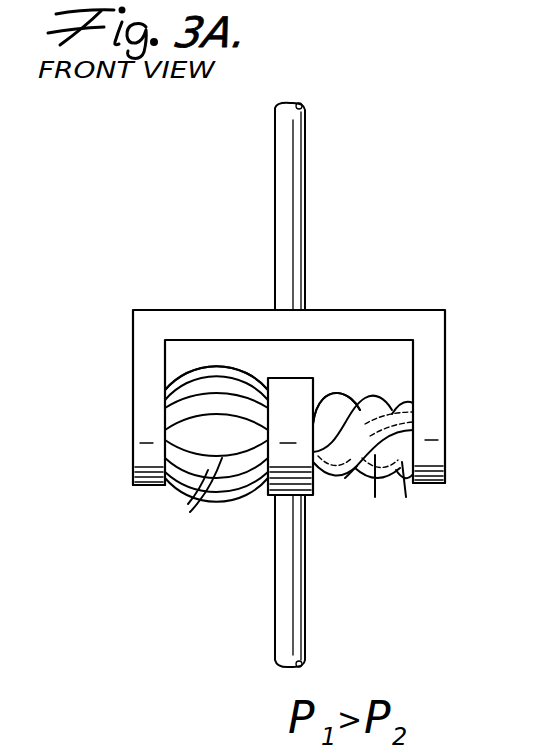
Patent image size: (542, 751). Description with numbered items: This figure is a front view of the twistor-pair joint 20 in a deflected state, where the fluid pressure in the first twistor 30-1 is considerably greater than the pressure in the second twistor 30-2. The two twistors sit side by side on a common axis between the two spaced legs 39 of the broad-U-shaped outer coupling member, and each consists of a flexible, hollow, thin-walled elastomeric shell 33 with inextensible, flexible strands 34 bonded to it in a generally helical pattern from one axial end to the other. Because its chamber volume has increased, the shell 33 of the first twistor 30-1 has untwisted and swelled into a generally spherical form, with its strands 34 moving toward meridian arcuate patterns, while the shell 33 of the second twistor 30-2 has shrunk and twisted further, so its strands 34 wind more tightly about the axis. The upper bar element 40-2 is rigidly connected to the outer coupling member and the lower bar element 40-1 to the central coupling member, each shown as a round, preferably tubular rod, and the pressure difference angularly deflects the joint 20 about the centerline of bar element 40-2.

The twistor-pair joint 20 is at (396, 232).
The first twistor 30-1 is at (226, 512).
The second twistor 30-2 is at (346, 489).
The elastomeric shell 33 is at (193, 383).
The inextensible flexible strands 34 is at (216, 498).
The legs of outer coupling member 39 is at (132, 451).
The first bar element 40-1 is at (274, 598).
The second bar element 40-2 is at (306, 160).